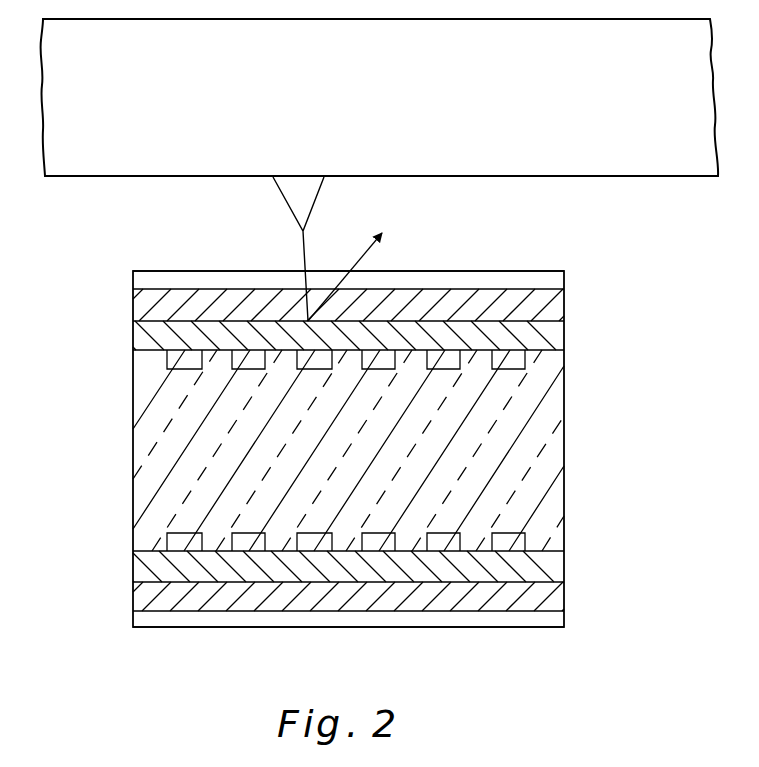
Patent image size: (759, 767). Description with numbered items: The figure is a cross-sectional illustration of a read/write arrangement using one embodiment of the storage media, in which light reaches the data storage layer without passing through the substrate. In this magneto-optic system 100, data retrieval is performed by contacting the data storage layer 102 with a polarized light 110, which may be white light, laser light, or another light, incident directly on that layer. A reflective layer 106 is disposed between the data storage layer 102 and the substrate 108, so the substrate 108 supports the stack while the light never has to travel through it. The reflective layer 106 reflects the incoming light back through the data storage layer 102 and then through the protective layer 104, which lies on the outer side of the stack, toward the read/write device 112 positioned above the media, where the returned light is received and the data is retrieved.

The magneto-optic system 100 is at (110, 648).
The data storage layer 102 is at (553, 308).
The protective layer 104 is at (551, 280).
The reflective layer 106 is at (555, 337).
The substrate 108 is at (540, 458).
The polarized light 110 is at (303, 247).
The read/write device 112 is at (470, 103).